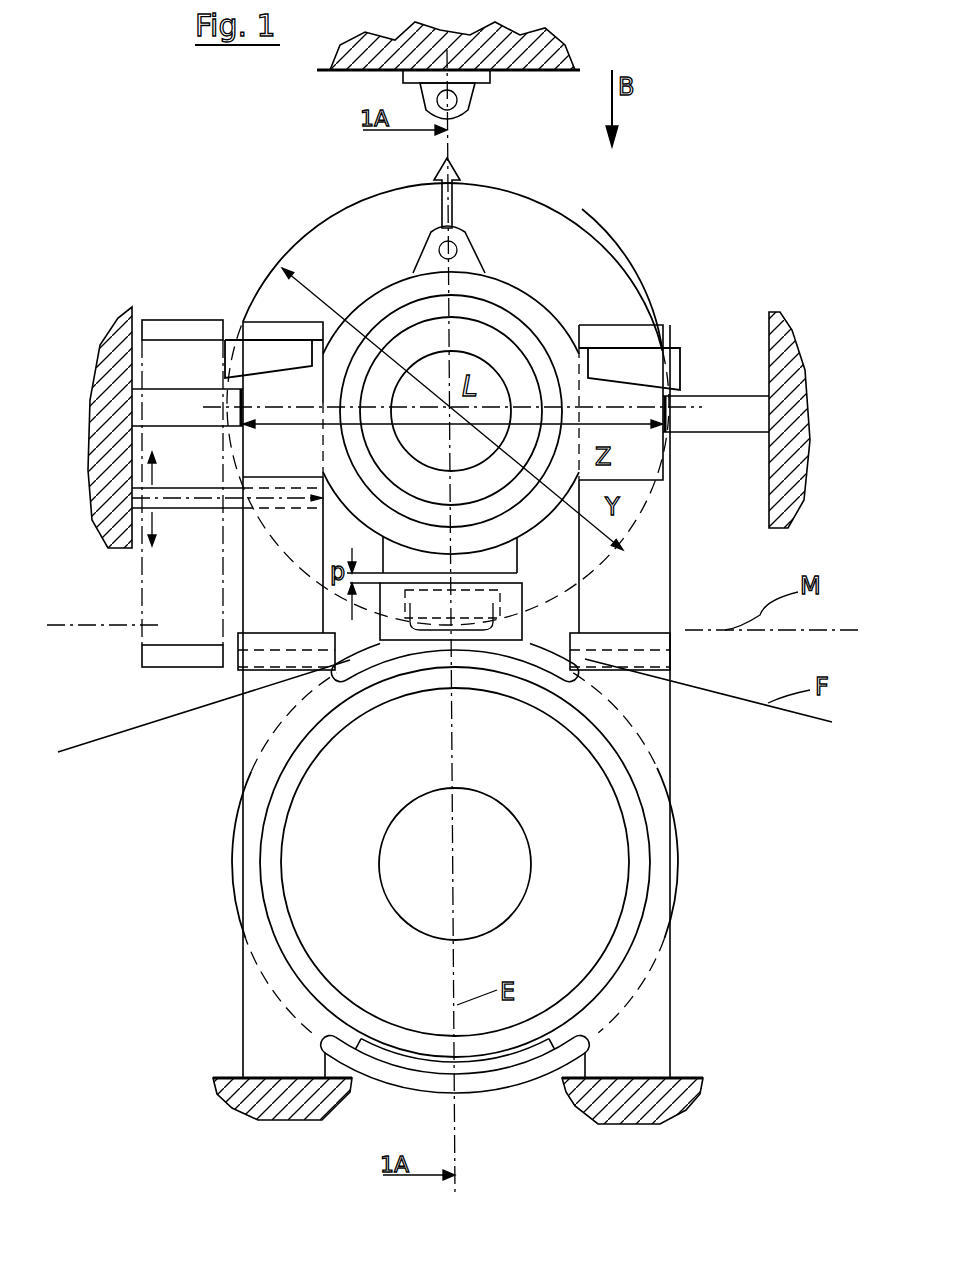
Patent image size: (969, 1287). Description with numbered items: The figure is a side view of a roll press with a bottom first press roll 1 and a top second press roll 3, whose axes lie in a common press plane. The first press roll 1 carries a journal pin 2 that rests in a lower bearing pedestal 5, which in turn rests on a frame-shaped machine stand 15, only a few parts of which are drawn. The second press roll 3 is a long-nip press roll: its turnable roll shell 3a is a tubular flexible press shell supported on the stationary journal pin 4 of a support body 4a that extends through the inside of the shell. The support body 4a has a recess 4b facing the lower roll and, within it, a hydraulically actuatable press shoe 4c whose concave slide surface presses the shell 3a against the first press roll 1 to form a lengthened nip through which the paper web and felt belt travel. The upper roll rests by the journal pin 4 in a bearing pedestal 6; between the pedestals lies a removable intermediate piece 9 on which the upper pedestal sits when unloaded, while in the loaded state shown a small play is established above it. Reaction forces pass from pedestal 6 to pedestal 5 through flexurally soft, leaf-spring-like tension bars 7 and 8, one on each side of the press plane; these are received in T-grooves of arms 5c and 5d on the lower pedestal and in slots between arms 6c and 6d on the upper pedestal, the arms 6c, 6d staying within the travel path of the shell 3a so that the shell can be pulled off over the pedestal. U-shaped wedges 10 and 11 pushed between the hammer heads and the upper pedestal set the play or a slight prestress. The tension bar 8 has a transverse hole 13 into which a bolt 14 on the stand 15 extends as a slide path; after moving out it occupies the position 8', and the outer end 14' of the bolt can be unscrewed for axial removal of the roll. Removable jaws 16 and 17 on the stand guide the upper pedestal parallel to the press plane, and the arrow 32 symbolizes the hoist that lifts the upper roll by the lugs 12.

The first press roll 1 is at (675, 892).
The journal pin 2 is at (508, 838).
The second press roll 3 is at (292, 203).
The roll shell 3a is at (623, 274).
The journal pin 4 is at (397, 350).
The support body 4a is at (392, 648).
The recess 4b is at (478, 625).
The press shoe 4c is at (438, 622).
The bearing pedestal 5 is at (652, 815).
The arm 5c is at (253, 678).
The arm 5d is at (657, 720).
The bearing pedestal 6 is at (520, 303).
The arm 6c is at (295, 452).
The arm 6d is at (640, 464).
The tension bar 7 is at (640, 598).
The tension bar 8 is at (230, 700).
The moved-out tension bar position 8' is at (139, 493).
The intermediate piece 9 is at (513, 595).
The wedge 10 is at (668, 350).
The wedge 11 is at (270, 357).
The lug 12 is at (465, 255).
The transverse hole 13 is at (325, 502).
The bolt 14 is at (227, 527).
The outer end of bolt 14' is at (277, 539).
The machine stand 15 is at (518, 68).
The jaw 16 is at (722, 424).
The jaw 17 is at (192, 412).
The arrow 32 is at (457, 168).